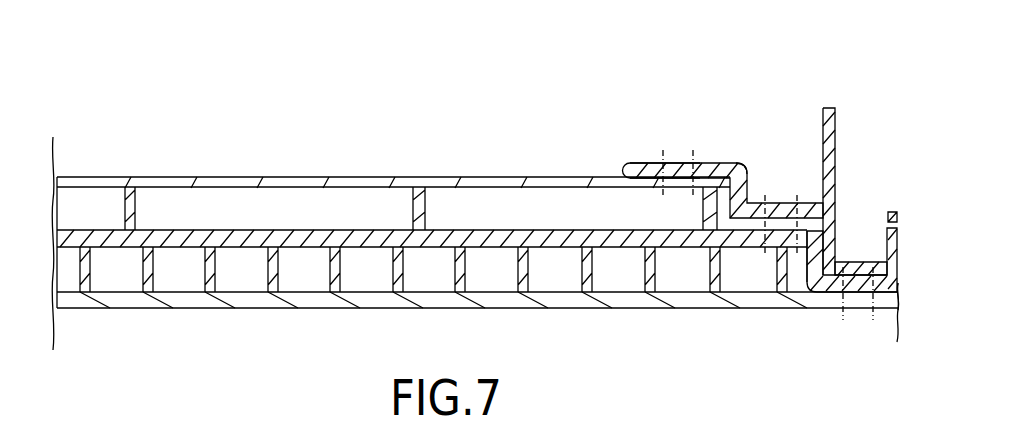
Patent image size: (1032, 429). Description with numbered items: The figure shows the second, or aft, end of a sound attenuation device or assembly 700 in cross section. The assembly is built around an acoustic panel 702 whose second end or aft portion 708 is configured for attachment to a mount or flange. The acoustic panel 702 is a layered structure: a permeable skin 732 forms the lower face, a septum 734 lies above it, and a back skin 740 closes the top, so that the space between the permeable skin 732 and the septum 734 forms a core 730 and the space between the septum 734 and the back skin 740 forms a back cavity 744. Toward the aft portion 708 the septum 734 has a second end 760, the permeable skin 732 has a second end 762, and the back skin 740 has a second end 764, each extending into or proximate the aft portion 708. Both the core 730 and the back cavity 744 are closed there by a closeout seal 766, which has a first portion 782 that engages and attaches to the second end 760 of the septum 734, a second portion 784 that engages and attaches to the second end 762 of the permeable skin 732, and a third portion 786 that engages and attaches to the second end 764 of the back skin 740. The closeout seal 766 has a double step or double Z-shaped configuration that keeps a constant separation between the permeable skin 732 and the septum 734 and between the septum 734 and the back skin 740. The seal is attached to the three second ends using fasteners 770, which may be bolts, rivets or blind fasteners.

The sound attenuation device or assembly 700 is at (88, 98).
The acoustic panel 702 is at (158, 167).
The back cavity 744 is at (238, 166).
The back skin 740 is at (445, 178).
The third portion of closeout seal 786 is at (633, 163).
The fastener 770 is at (665, 163).
The second end of back skin 764 is at (738, 176).
The closeout seal 766 is at (740, 168).
The second end or aft portion 708 is at (864, 108).
The core 730 is at (118, 318).
The permeable skin 732 is at (190, 303).
The septum 734 is at (250, 250).
The first portion of closeout seal 782 is at (752, 227).
The second end of septum 760 is at (805, 232).
The second end of permeable skin 762 is at (887, 308).
The second portion of closeout seal 784 is at (897, 312).